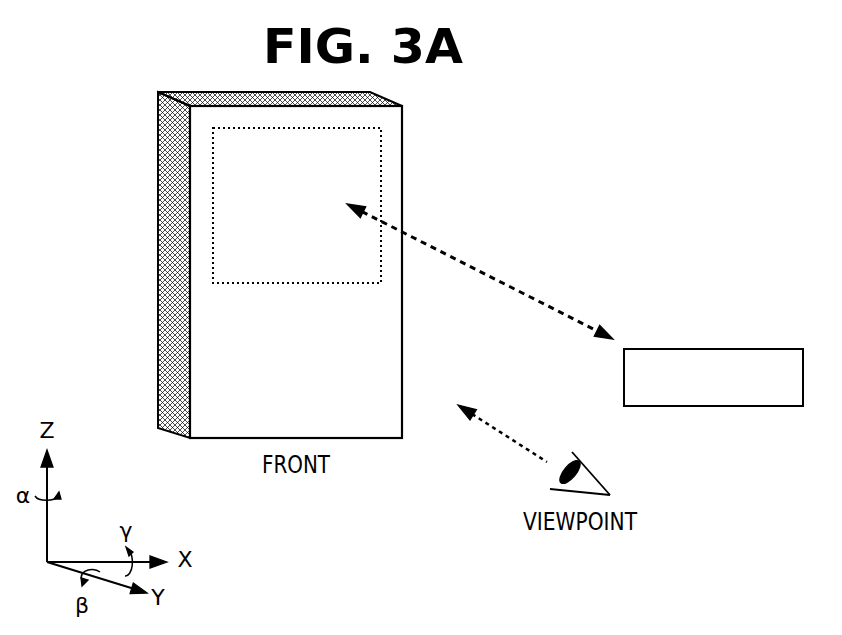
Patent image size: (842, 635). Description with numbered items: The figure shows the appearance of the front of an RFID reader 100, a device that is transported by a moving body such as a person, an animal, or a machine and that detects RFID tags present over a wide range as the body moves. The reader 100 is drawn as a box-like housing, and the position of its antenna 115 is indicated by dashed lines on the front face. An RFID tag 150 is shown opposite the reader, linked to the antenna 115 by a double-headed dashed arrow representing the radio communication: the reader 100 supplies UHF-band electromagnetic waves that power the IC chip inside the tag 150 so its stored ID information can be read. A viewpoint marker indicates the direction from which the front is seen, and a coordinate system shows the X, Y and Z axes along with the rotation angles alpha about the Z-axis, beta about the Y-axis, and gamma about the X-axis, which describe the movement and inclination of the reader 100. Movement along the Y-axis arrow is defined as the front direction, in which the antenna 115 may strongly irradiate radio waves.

The RFID reader 100 is at (168, 205).
The antenna 115 is at (212, 250).
The RFID tag 150 is at (710, 348).